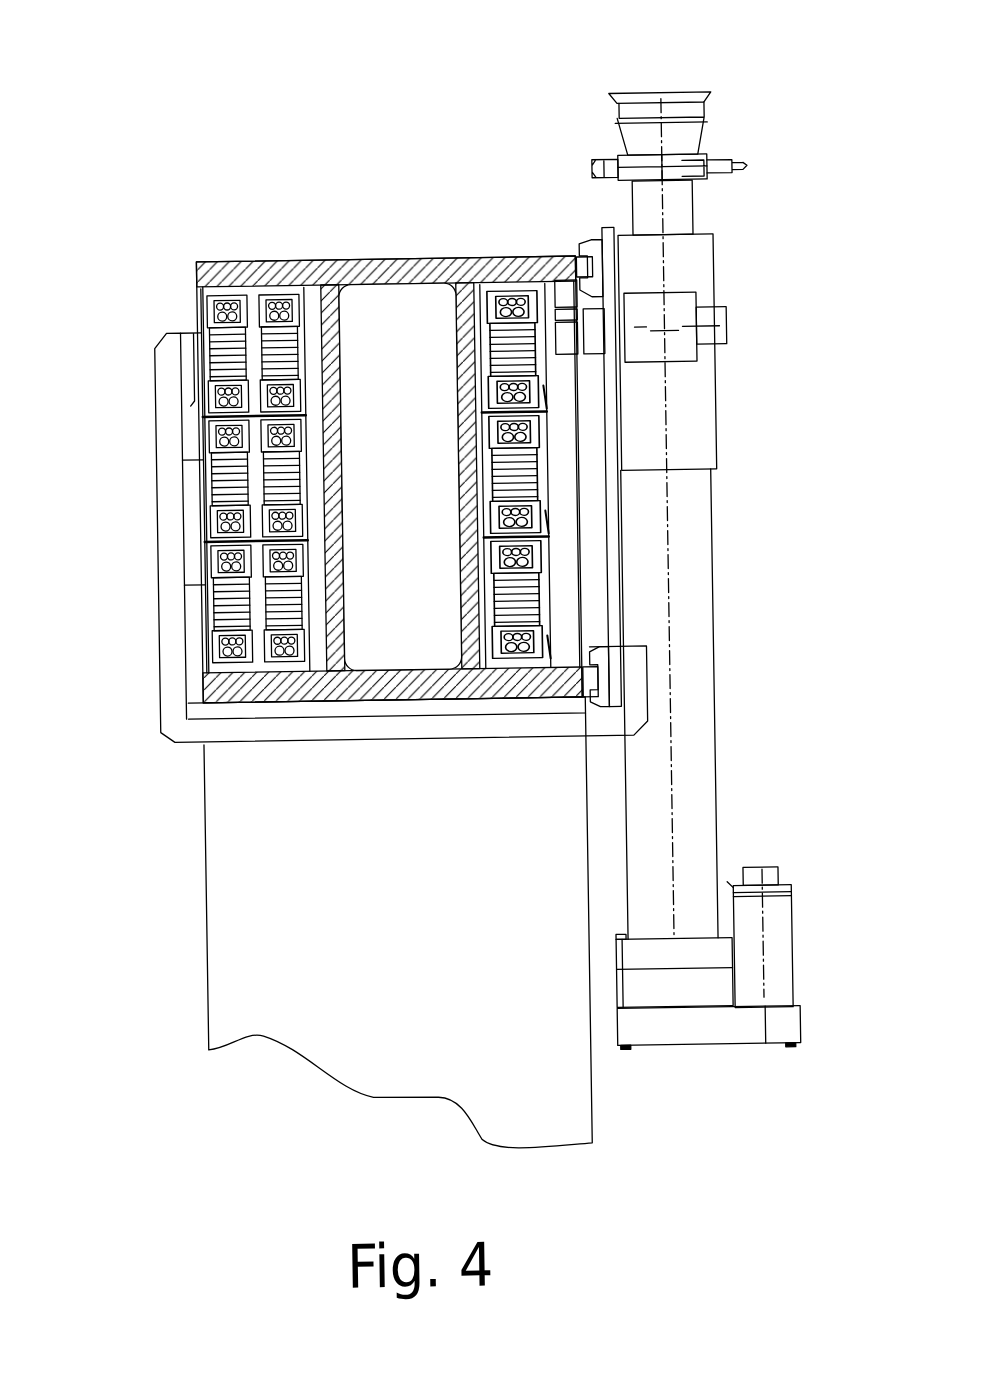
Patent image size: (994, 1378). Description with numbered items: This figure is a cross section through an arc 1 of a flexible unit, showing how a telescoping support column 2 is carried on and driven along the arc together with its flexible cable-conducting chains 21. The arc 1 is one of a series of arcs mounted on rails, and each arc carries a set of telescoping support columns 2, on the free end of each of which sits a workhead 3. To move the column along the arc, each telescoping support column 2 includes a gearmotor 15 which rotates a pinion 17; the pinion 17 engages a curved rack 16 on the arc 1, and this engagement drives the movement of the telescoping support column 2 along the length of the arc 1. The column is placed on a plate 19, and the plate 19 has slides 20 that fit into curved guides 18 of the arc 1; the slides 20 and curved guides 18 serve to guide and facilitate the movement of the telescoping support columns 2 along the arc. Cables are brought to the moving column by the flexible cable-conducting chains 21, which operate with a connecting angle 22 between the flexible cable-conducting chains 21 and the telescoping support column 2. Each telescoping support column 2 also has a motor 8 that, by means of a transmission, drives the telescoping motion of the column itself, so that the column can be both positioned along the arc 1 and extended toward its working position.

The arc 1 is at (184, 845).
The telescoping support column 2 is at (738, 430).
The workhead 3 is at (708, 82).
The motor 8 is at (773, 943).
The gearmotor 15 is at (686, 317).
The curved rack 16 is at (569, 295).
The pinion 17 is at (567, 342).
The curved guide 18 is at (590, 260).
The plate 19 is at (613, 587).
The slide 20 is at (605, 250).
The flexible cable-conducting chain 21 is at (289, 300).
The connecting angle 22 is at (176, 404).